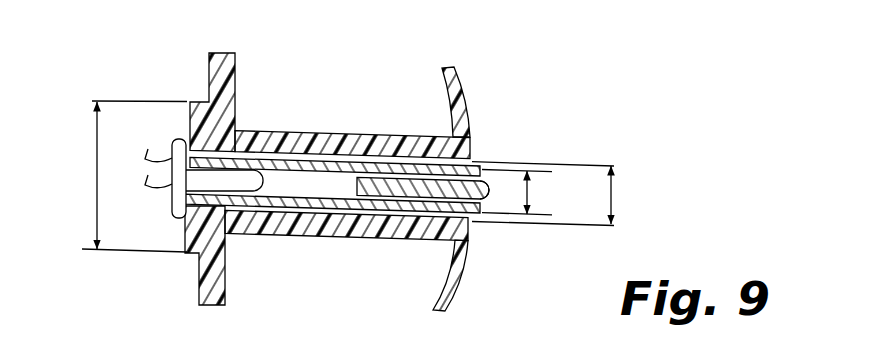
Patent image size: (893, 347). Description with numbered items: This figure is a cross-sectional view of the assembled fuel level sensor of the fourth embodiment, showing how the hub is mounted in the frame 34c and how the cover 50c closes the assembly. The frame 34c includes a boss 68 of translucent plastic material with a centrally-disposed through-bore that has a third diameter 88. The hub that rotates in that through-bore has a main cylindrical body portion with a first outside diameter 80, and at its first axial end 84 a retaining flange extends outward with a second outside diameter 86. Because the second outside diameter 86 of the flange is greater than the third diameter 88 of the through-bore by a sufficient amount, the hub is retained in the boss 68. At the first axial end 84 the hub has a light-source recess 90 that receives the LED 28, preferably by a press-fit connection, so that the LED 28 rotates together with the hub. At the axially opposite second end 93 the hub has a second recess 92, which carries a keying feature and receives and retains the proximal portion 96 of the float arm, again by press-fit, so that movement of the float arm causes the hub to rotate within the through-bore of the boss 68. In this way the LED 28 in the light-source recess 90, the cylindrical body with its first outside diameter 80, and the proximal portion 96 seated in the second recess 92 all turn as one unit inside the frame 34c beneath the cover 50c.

The LED 28 is at (170, 192).
The frame 34c is at (235, 66).
The cover 50c is at (472, 118).
The boss 68 is at (328, 134).
The first outside diameter 80 is at (531, 192).
The first axial end 84 is at (190, 258).
The second outside diameter 86 is at (96, 172).
The third diameter 88 is at (613, 190).
The light-source recess 90 is at (276, 168).
The second recess 92 is at (486, 188).
The second end 93 is at (482, 233).
The proximal portion 96 is at (388, 197).